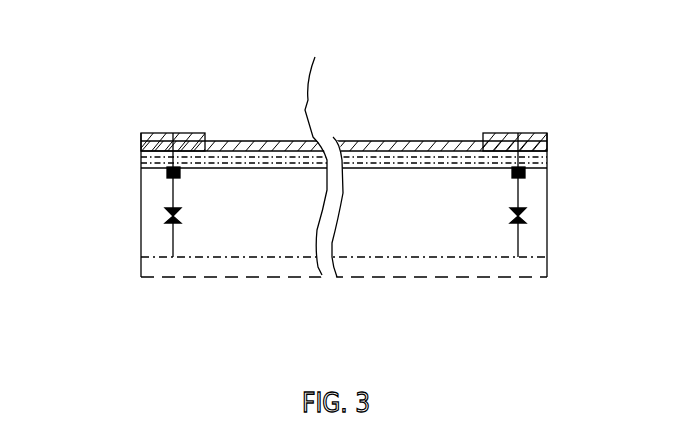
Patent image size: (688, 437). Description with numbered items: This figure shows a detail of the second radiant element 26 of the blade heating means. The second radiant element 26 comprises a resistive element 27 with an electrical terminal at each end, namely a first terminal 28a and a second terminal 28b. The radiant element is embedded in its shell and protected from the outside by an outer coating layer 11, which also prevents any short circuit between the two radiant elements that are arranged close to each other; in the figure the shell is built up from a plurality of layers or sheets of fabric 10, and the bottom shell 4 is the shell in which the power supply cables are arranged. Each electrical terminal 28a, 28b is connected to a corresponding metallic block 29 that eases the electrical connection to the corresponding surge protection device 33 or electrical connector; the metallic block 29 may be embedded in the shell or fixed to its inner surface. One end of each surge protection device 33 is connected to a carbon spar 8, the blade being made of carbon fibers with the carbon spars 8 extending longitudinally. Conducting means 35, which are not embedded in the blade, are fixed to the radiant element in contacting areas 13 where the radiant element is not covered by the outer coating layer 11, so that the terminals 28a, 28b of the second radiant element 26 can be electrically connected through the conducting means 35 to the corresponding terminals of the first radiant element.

The bottom shell 4 is at (267, 245).
The carbon spar 8 is at (158, 268).
The layers or sheets of fabric 10 is at (409, 150).
The outer coating layer 11 is at (267, 141).
The contacting area 13 is at (155, 137).
The second radiant element 26 is at (357, 141).
The resistive element 27 is at (323, 153).
The first terminal 28a is at (143, 146).
The second terminal 28b is at (547, 142).
The metallic block 29 is at (165, 173).
The surge protection device 33 is at (183, 210).
The conducting means 35 is at (173, 133).